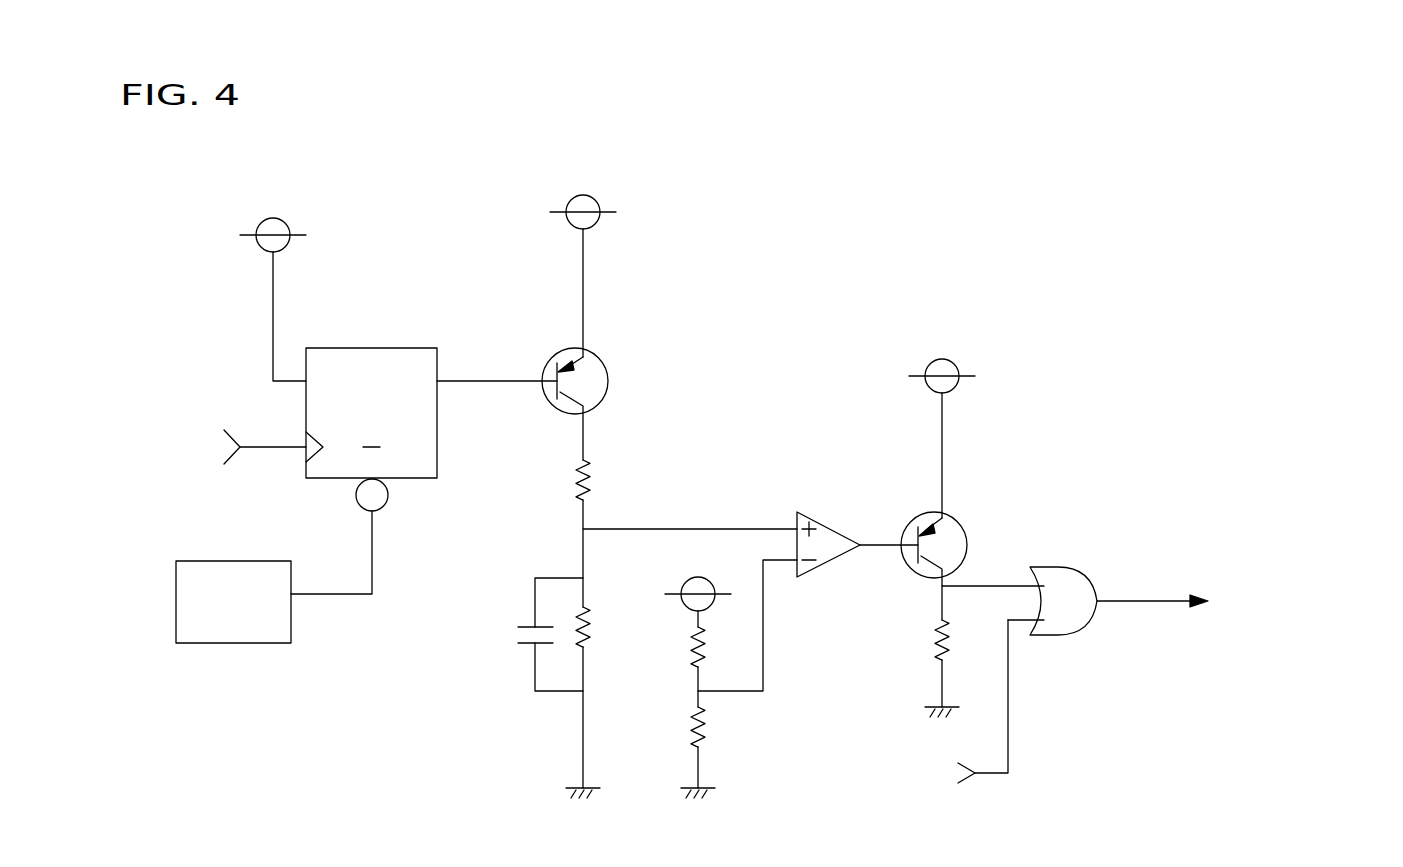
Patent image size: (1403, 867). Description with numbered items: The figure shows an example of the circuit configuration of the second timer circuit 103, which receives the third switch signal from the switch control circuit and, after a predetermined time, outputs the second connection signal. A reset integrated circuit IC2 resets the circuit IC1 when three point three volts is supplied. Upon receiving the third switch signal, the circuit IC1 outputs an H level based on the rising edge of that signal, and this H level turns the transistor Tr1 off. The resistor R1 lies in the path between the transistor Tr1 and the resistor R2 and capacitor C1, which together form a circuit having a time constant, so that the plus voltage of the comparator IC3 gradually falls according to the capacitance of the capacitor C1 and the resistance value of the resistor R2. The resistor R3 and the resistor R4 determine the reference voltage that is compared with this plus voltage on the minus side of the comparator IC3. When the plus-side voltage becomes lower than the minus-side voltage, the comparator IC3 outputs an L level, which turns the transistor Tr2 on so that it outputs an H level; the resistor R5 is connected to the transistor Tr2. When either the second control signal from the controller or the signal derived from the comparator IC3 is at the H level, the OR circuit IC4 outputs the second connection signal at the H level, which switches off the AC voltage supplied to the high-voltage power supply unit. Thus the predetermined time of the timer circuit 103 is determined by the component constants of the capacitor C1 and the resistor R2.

The timer circuit 2 103 is at (790, 865).
The circuit IC1 is at (375, 347).
The reset integrated circuit IC2 is at (233, 620).
The comparator IC3 is at (828, 529).
The OR circuit IC4 is at (1085, 578).
The transistor Tr1 is at (605, 363).
The transistor Tr2 is at (961, 528).
The resistor R1 is at (598, 481).
The resistor R2 is at (599, 628).
The resistor R3 is at (679, 647).
The resistor R4 is at (679, 729).
The resistor R5 is at (924, 642).
The capacitor C1 is at (534, 634).